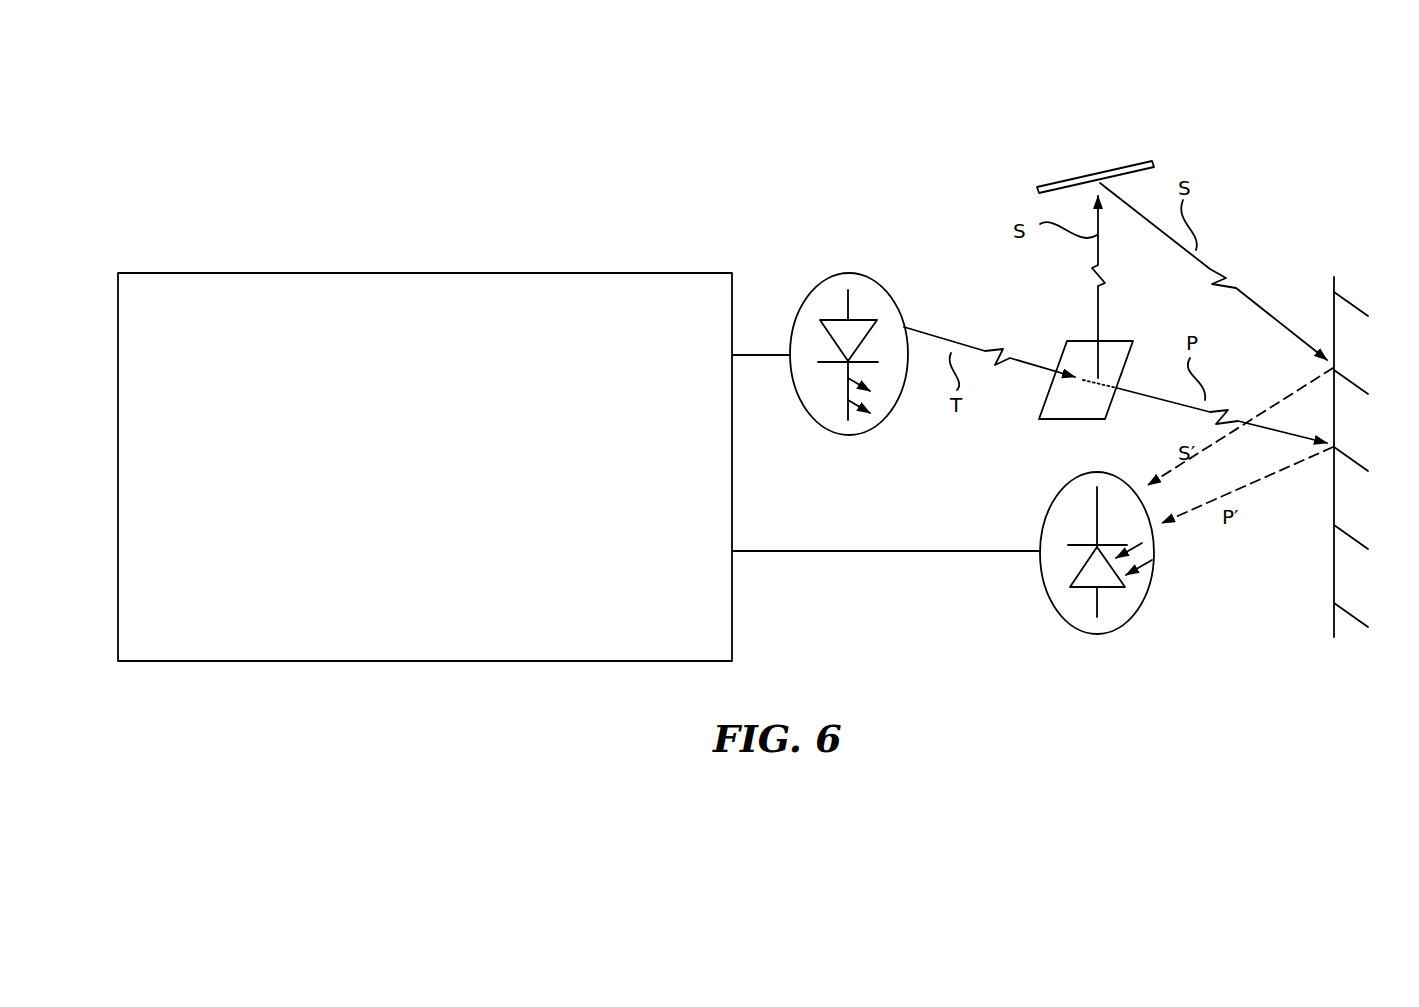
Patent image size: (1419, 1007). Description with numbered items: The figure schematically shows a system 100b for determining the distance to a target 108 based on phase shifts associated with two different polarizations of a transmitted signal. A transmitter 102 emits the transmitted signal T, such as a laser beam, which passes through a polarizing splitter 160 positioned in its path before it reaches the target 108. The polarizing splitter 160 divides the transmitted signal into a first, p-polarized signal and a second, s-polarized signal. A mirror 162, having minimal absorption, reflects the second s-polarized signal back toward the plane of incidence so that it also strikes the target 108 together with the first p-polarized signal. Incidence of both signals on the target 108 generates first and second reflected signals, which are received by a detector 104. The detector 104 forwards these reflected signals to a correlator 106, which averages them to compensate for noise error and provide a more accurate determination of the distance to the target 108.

The system 100b is at (975, 134).
The transmitter 102 is at (888, 284).
The detector 104 is at (1062, 490).
The correlator 106 is at (308, 273).
The target 108 is at (1350, 296).
The polarizing splitter 160 is at (1108, 340).
The mirror 162 is at (1141, 166).